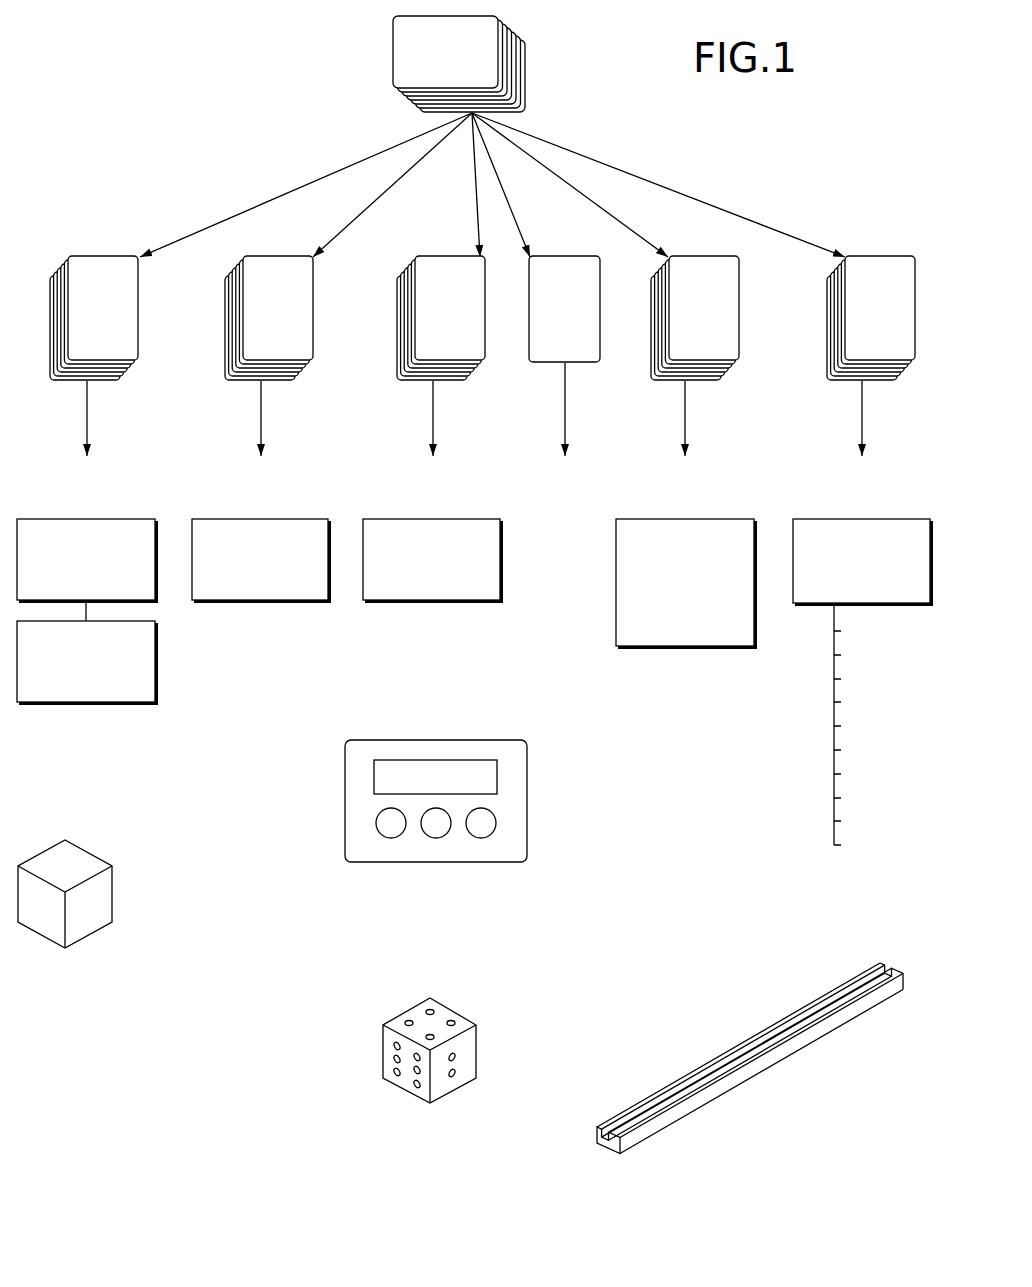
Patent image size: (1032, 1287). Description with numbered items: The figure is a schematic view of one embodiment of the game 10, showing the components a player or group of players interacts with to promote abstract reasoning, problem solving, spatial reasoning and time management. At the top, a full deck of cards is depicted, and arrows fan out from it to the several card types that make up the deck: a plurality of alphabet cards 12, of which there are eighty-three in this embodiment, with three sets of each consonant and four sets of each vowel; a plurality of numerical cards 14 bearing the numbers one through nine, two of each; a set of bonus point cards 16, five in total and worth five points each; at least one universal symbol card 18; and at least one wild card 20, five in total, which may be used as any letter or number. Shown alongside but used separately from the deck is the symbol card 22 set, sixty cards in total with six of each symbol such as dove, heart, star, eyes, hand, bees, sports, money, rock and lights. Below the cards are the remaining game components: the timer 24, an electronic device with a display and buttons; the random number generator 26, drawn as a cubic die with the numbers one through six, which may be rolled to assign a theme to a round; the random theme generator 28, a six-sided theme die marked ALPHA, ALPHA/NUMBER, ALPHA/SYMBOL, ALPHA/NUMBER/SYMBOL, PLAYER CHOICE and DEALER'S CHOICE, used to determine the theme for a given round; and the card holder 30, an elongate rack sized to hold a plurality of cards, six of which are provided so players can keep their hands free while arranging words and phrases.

The game 10 is at (196, 72).
The alphabet cards 12 is at (101, 256).
The numerical cards 14 is at (277, 256).
The bonus point cards 16 is at (448, 256).
The universal symbol card 18 is at (563, 256).
The wild card 20 is at (700, 256).
The symbol card 22 is at (880, 256).
The timer 24 is at (434, 740).
The random number generator 26 is at (430, 998).
The random theme generator 28 is at (65, 840).
The card holder 30 is at (738, 1045).